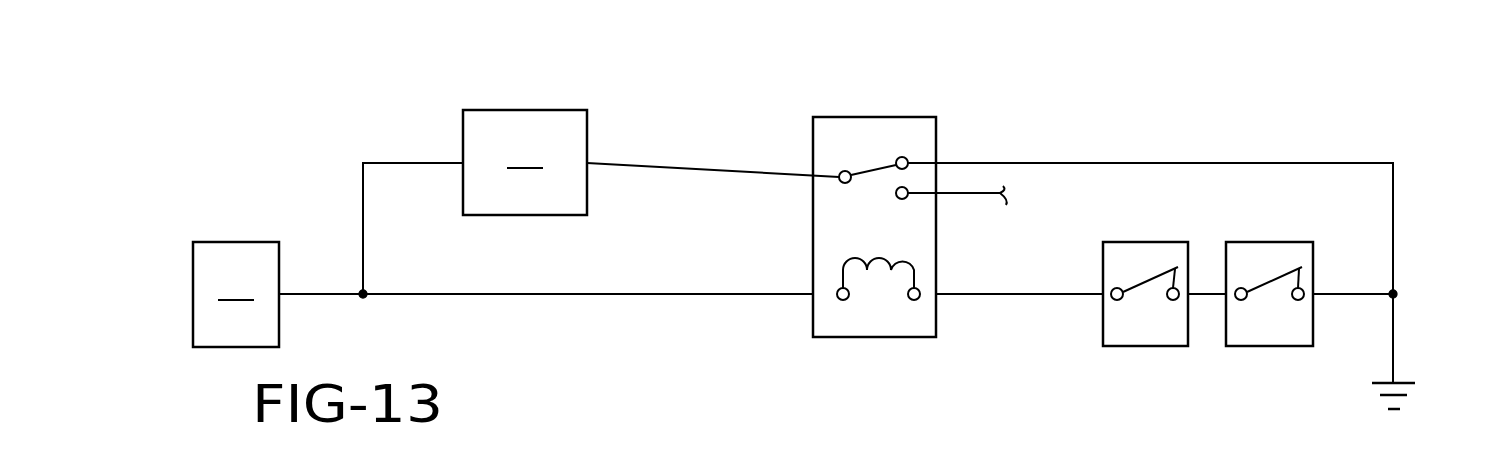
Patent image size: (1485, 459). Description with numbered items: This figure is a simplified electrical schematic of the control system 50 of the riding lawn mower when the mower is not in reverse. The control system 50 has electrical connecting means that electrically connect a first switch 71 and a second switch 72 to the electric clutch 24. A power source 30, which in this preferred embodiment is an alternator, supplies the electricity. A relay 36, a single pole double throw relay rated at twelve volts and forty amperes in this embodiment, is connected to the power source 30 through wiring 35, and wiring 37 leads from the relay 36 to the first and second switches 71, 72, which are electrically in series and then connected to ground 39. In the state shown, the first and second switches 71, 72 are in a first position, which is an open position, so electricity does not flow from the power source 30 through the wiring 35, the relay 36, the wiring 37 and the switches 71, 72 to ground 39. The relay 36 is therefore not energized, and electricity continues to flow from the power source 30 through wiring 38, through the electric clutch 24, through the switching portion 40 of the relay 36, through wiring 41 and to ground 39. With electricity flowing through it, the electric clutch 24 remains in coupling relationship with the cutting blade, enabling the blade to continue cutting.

The electric clutch 24 is at (651, 162).
The power source 30 is at (236, 294).
The wiring 35 is at (503, 294).
The relay 36 is at (867, 337).
The wiring 37 is at (1017, 294).
The wiring 38 is at (417, 163).
The ground 39 is at (1402, 378).
The switching portion 40 is at (896, 128).
The wiring 41 is at (1285, 163).
The control system 50 is at (1058, 88).
The first switch 71 is at (1150, 337).
The second switch 72 is at (1270, 337).